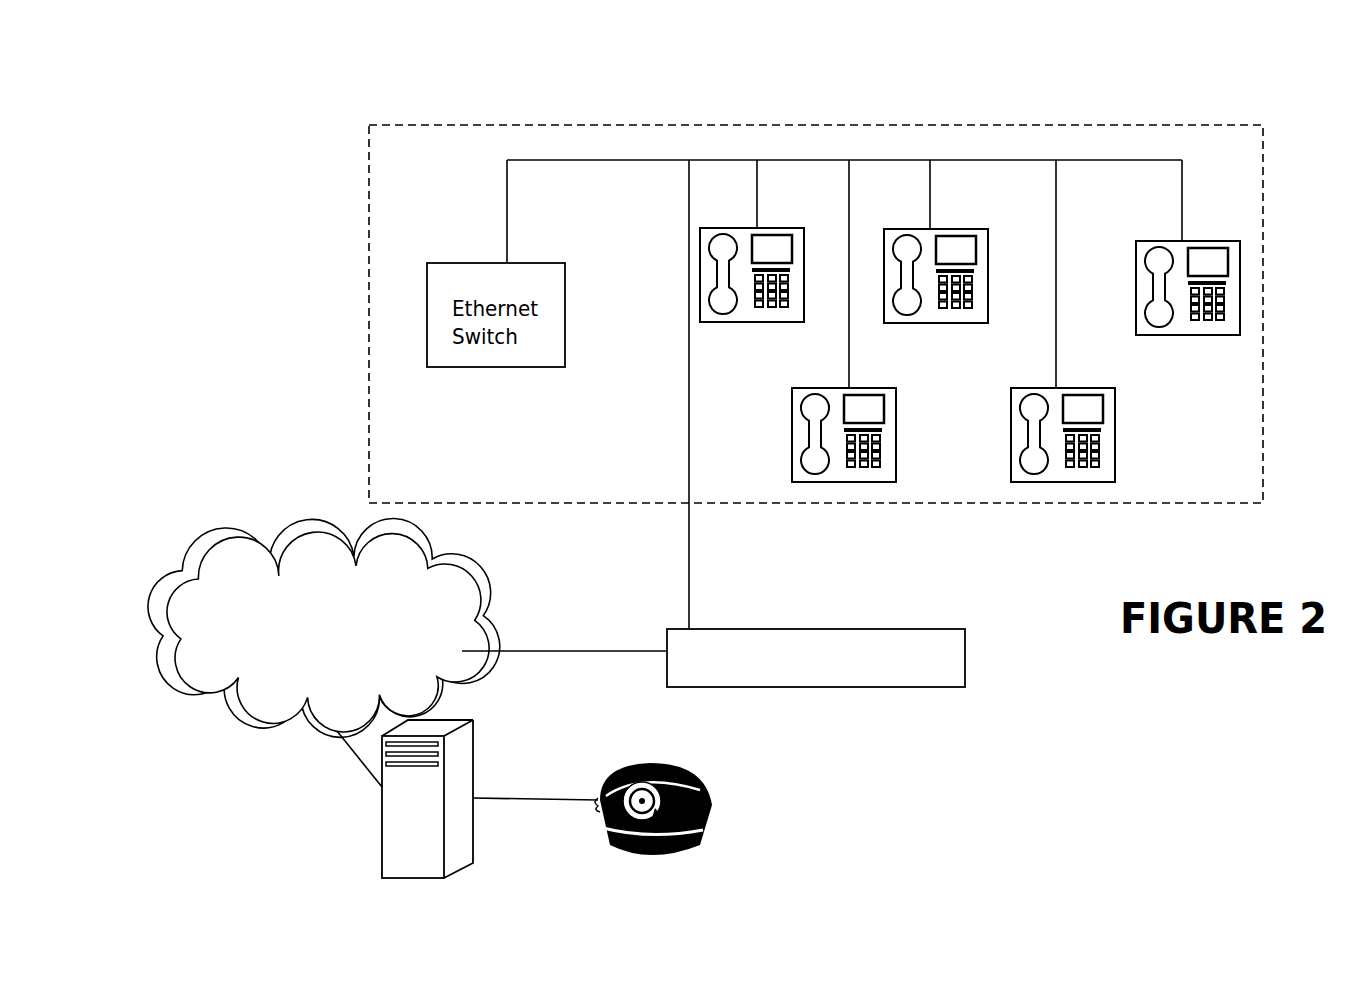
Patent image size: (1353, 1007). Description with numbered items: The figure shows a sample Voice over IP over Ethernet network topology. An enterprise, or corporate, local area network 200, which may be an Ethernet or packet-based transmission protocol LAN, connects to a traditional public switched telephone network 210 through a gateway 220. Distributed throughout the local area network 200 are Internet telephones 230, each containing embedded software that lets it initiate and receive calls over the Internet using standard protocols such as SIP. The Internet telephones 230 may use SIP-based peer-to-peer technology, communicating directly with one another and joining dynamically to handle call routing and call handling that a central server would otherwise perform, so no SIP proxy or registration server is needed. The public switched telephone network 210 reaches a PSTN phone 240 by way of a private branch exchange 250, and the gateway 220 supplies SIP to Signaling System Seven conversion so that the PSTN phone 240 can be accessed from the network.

The enterprise local area network 200 is at (362, 191).
The public switched telephone network 210 is at (278, 605).
The gateway 220 is at (932, 674).
The Internet telephones 230 is at (733, 253).
The PSTN phone 240 is at (713, 805).
The private branch exchange 250 is at (393, 855).